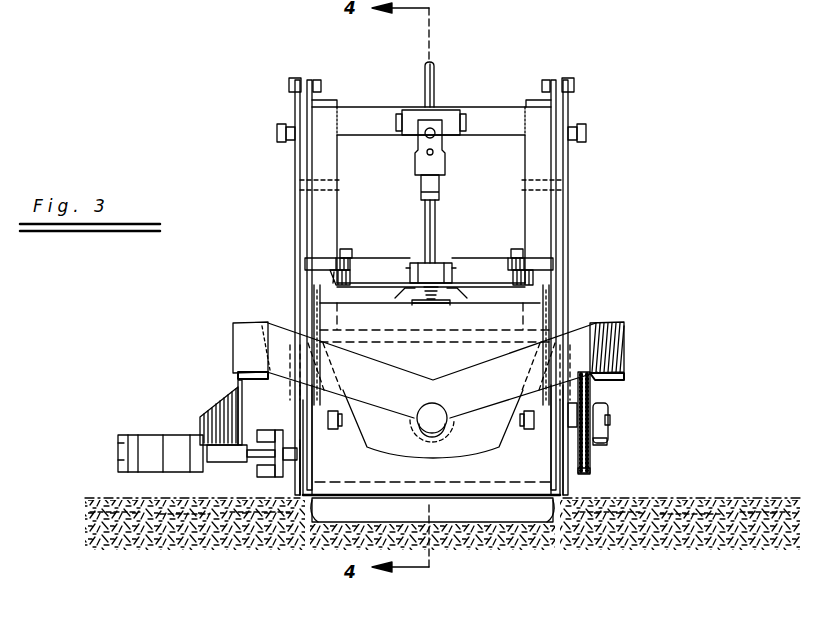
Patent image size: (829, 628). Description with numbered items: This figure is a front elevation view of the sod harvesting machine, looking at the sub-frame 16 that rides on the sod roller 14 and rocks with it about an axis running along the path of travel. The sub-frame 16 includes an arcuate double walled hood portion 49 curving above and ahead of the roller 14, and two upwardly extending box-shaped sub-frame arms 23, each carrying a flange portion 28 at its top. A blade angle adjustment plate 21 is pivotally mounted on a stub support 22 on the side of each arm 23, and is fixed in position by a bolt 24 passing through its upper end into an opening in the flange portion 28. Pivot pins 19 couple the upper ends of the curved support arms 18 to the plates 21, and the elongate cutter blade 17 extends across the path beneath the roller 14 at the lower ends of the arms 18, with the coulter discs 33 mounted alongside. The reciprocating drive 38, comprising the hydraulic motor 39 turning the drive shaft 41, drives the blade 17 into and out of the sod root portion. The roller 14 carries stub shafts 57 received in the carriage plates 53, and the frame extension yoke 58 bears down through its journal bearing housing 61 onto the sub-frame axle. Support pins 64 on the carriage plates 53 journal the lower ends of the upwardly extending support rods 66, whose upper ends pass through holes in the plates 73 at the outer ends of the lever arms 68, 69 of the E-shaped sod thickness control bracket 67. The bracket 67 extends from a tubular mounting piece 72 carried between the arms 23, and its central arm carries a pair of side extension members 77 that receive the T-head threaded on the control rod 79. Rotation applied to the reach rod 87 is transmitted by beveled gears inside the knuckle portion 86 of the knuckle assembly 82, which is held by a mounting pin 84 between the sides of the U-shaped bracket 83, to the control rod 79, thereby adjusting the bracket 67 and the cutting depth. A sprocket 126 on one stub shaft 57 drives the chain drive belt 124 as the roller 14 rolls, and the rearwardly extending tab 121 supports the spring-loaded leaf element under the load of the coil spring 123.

The roller 14 is at (350, 467).
The sub-frame 16 is at (489, 105).
The cutter blade 17 is at (470, 524).
The support arms 18 is at (296, 182).
The pivot pins 19 is at (277, 135).
The blade angle adjustment plate 21 is at (308, 110).
The stub supports 22 is at (340, 185).
The sub-frame arms 23 is at (338, 222).
The bolts 24 is at (290, 86).
The flange portion 28 is at (312, 100).
The coulter discs 33 is at (320, 524).
The reciprocating drive 38 is at (176, 440).
The hydraulic motor 39 is at (167, 442).
The drive shaft 41 is at (258, 453).
The hood portion 49 is at (448, 360).
The carriage plates 53 is at (312, 402).
The stub shafts 57 is at (610, 420).
The frame extension yoke 58 is at (390, 393).
The journal bearing housing 61 is at (444, 438).
The support pins 64 is at (342, 421).
The support rods 66 is at (316, 305).
The sod thickness control bracket 67 is at (397, 255).
The lever arm 68 is at (520, 272).
The lever arm 69 is at (352, 278).
The tubular mounting piece 72 is at (447, 266).
The plates 73 is at (330, 258).
The side extension members 77 is at (410, 296).
The control rod 79 is at (436, 220).
The knuckle assembly 82 is at (414, 150).
The U-shaped bracket 83 is at (405, 109).
The mounting pin 84 is at (398, 123).
The knuckle portion 86 is at (445, 165).
The reach rod 87 is at (438, 70).
The tab 121 is at (412, 304).
The coil spring 123 is at (428, 299).
The chain drive belt 124 is at (591, 471).
The sprocket 126 is at (600, 444).